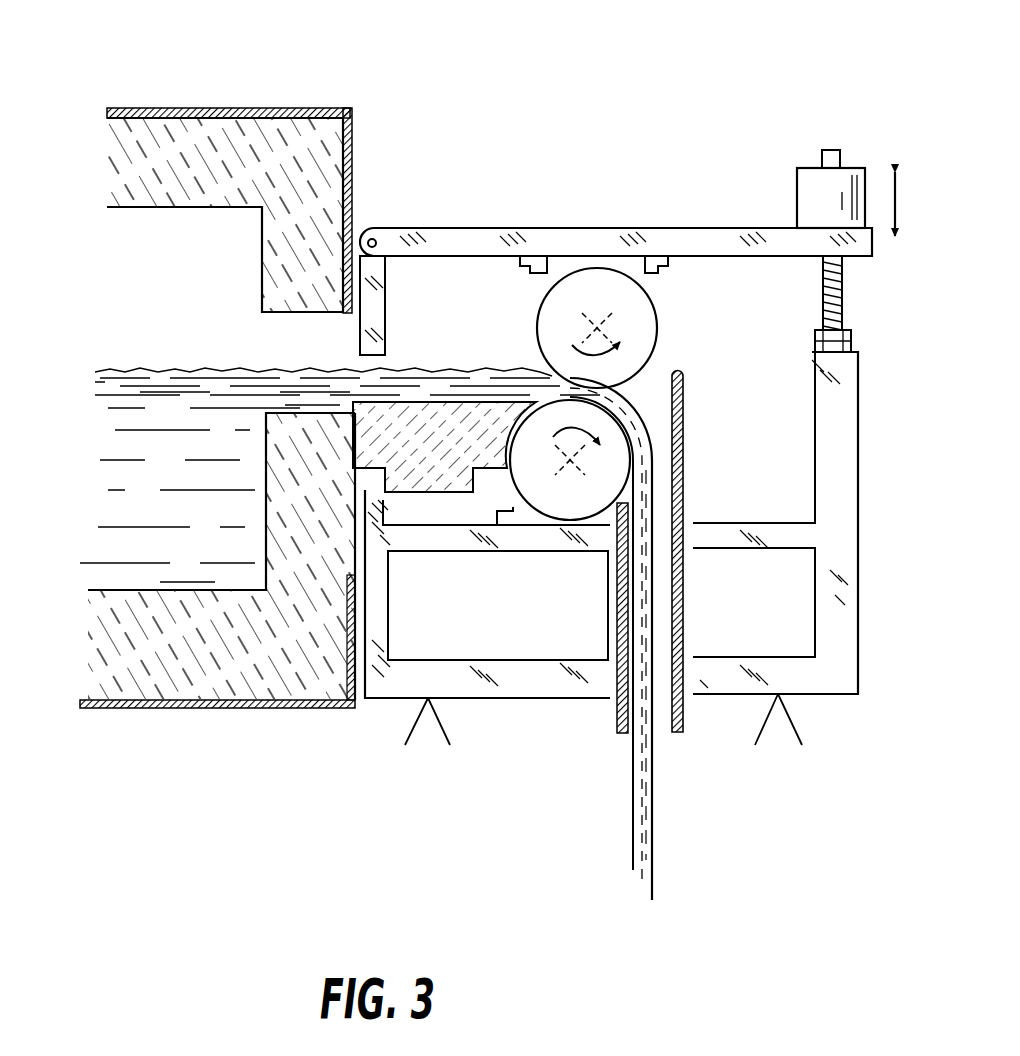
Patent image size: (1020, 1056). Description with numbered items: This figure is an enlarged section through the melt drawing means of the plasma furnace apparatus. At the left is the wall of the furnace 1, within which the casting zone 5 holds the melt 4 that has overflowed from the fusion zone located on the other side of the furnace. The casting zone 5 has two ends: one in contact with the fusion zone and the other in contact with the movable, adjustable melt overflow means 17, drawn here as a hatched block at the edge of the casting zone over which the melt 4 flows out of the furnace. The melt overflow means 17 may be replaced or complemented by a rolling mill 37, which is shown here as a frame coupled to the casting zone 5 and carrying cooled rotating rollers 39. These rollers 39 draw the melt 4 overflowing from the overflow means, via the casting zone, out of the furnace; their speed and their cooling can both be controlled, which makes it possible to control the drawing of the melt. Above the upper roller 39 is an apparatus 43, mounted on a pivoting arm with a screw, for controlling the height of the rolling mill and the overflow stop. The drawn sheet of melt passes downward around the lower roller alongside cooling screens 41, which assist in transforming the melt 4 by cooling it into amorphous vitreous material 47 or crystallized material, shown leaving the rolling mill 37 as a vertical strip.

The furnace 1 is at (124, 92).
The casting zone 5 is at (135, 270).
The melt 4 is at (172, 368).
The cooled rotating rollers 39 is at (578, 295).
The apparatus for controlling the height of the rolling mill and the overflow stop 43 is at (818, 200).
The melt overflow means 17 is at (437, 455).
The amorphous vitreous material 47 is at (645, 812).
The cooling screens 41 is at (687, 715).
The rolling mill 37 is at (866, 685).